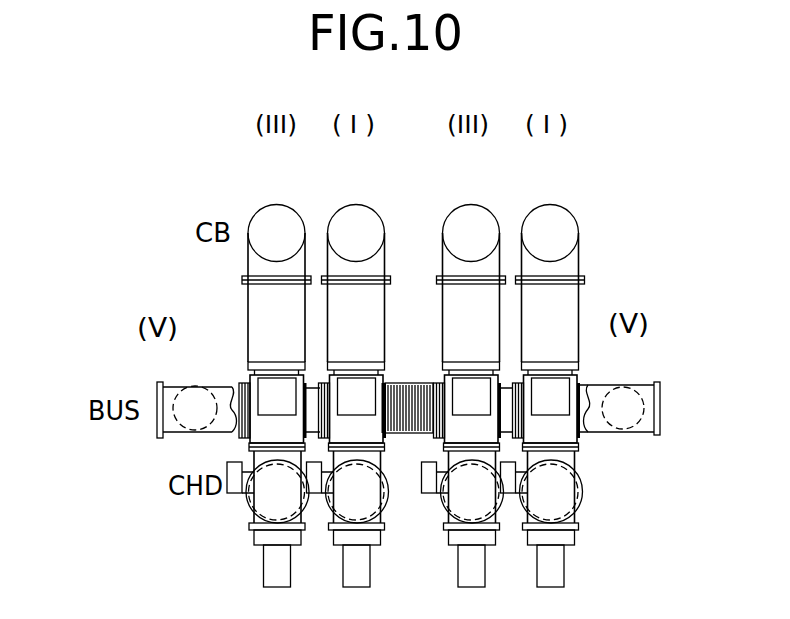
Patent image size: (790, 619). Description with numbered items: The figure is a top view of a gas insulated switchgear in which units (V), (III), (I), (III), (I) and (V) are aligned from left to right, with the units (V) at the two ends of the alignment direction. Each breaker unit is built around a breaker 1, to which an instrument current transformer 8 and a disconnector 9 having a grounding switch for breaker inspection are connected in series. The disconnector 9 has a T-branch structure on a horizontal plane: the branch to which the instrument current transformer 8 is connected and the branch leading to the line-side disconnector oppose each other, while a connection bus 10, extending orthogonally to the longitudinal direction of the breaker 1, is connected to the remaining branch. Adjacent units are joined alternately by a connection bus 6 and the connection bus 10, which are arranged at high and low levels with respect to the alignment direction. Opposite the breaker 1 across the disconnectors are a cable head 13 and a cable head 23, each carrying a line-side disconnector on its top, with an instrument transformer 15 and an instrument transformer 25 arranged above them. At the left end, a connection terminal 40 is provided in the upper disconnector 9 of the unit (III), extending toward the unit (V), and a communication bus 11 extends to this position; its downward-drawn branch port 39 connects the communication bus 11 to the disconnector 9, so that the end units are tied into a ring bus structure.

The breaker 1 is at (253, 205).
The connection bus 6 is at (311, 398).
The instrument current transformer 8 is at (268, 314).
The disconnector 9 is at (262, 430).
The connection bus 10 is at (412, 383).
The communication bus 11 is at (177, 386).
The cable head 13 is at (382, 527).
The instrument transformer 15 is at (383, 507).
The cable head 23 is at (250, 518).
The instrument transformer 25 is at (247, 505).
The branch port 39 is at (157, 432).
The connection terminal 40 is at (240, 383).